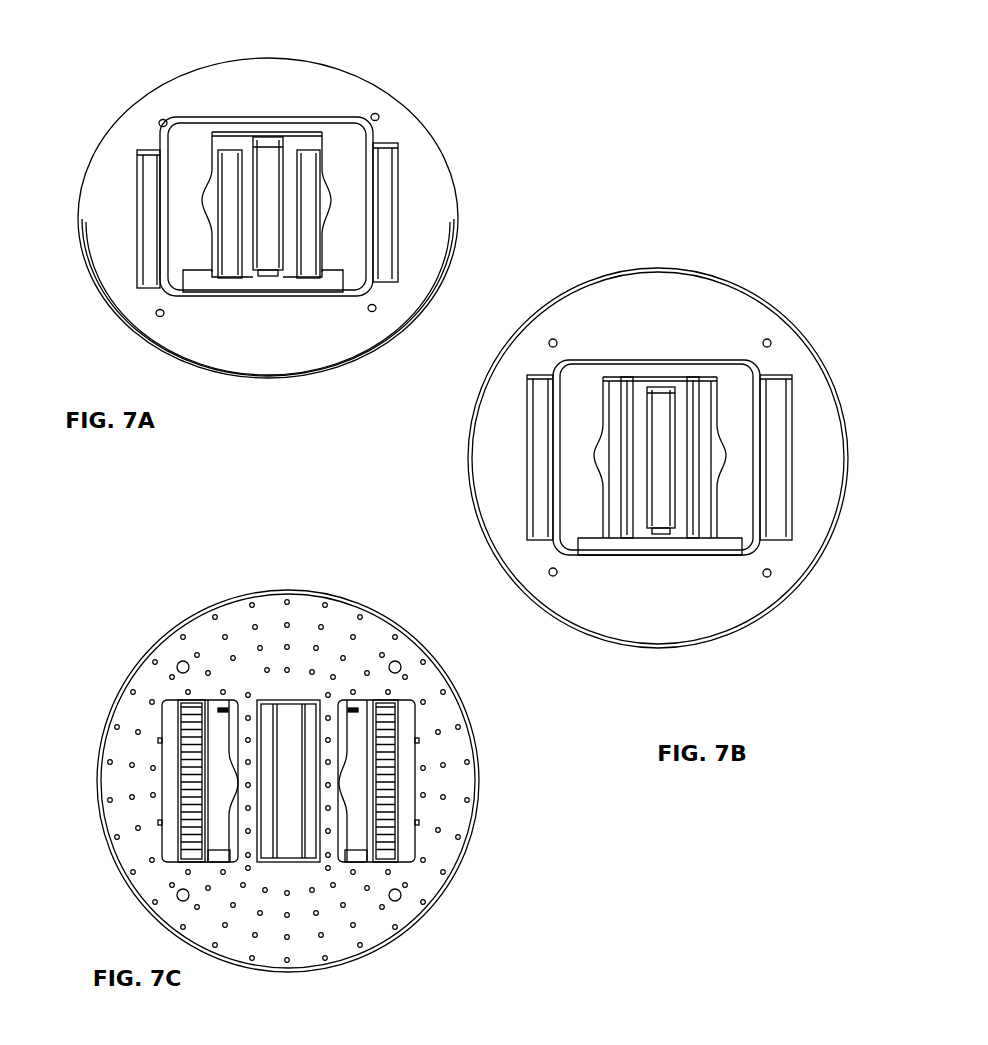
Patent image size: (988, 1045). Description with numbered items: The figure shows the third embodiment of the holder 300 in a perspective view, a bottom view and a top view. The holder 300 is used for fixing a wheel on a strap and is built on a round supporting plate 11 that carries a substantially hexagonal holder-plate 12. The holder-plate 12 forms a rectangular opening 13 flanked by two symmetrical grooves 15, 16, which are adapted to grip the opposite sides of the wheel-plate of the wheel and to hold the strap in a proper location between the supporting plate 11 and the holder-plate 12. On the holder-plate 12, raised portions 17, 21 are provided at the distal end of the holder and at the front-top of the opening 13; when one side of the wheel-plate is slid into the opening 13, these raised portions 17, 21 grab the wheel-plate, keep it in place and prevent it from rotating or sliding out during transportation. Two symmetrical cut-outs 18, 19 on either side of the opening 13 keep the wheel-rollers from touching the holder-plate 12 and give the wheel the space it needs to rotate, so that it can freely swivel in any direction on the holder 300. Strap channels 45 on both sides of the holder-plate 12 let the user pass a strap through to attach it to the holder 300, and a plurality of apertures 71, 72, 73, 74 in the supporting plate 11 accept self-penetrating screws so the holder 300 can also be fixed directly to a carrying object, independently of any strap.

In FIG. 7A, the supporting plate 11 is at (260, 76).
In FIG. 7B, the supporting plate 11 is at (631, 281).
In FIG. 7C, the supporting plate 11 is at (264, 603).
In FIG. 7A, the holder-plate 12 is at (193, 130).
In FIG. 7B, the holder-plate 12 is at (584, 366).
In FIG. 7A, the opening 13 is at (240, 283).
In FIG. 7B, the opening 13 is at (627, 549).
In FIG. 7C, the opening 13 is at (288, 781).
In FIG. 7A, the groove 15 is at (195, 286).
In FIG. 7B, the groove 15 is at (588, 553).
In FIG. 7A, the groove 16 is at (333, 280).
In FIG. 7B, the groove 16 is at (733, 553).
In FIG. 7A, the raised portion 17 is at (263, 270).
In FIG. 7B, the raised portion 17 is at (661, 536).
In FIG. 7C, the raised portion 17 is at (288, 781).
In FIG. 7A, the cut-out 18 is at (203, 196).
In FIG. 7B, the cut-out 18 is at (594, 462).
In FIG. 7C, the cut-out 18 is at (228, 783).
In FIG. 7A, the cut-out 19 is at (330, 186).
In FIG. 7B, the cut-out 19 is at (726, 461).
In FIG. 7C, the cut-out 19 is at (348, 787).
In FIG. 7C, the raised portion 21 is at (223, 704).
In FIG. 7A, the strap channel 45 is at (290, 167).
In FIG. 7B, the strap channel 45 is at (702, 386).
In FIG. 7B, the aperture 71 is at (548, 340).
In FIG. 7B, the aperture 72 is at (771, 340).
In FIG. 7B, the aperture 73 is at (772, 577).
In FIG. 7B, the aperture 74 is at (550, 576).
In FIG. 7A, the holder 300 is at (525, 0).
In FIG. 7B, the holder 300 is at (775, 253).
In FIG. 7C, the holder 300 is at (152, 598).